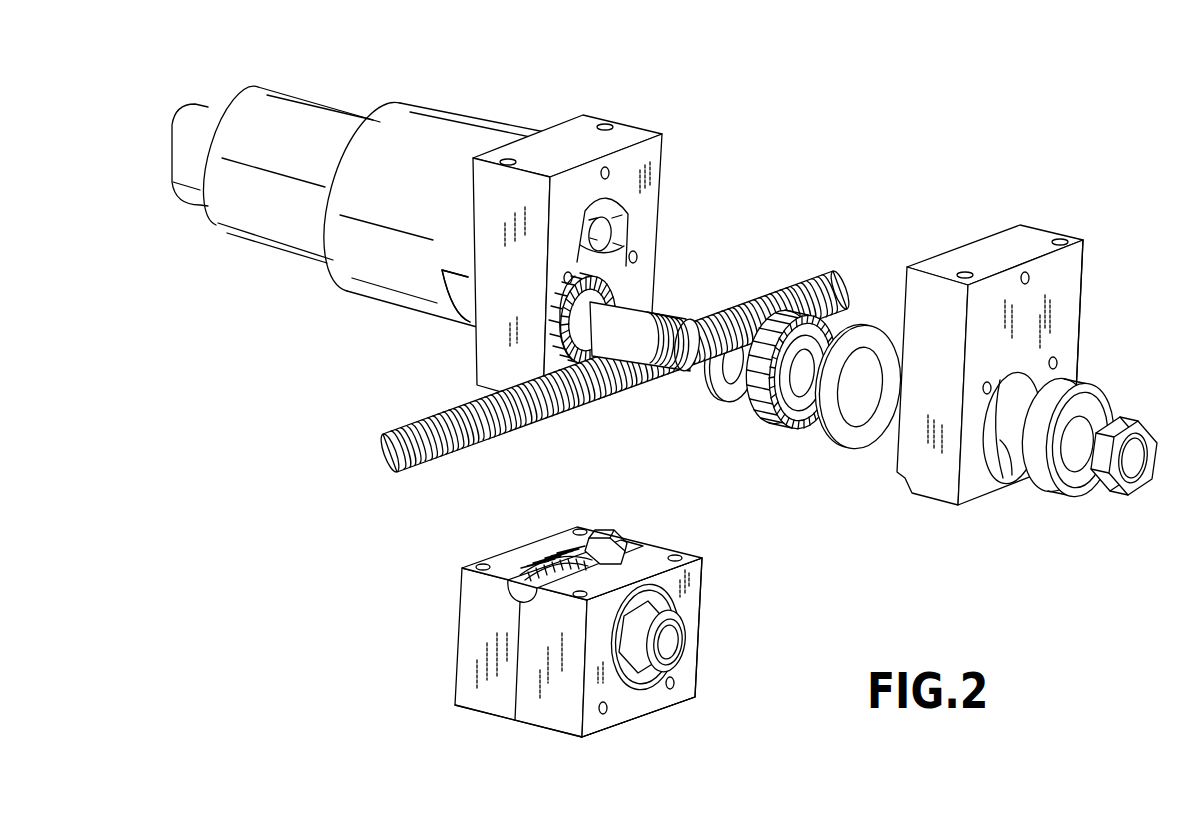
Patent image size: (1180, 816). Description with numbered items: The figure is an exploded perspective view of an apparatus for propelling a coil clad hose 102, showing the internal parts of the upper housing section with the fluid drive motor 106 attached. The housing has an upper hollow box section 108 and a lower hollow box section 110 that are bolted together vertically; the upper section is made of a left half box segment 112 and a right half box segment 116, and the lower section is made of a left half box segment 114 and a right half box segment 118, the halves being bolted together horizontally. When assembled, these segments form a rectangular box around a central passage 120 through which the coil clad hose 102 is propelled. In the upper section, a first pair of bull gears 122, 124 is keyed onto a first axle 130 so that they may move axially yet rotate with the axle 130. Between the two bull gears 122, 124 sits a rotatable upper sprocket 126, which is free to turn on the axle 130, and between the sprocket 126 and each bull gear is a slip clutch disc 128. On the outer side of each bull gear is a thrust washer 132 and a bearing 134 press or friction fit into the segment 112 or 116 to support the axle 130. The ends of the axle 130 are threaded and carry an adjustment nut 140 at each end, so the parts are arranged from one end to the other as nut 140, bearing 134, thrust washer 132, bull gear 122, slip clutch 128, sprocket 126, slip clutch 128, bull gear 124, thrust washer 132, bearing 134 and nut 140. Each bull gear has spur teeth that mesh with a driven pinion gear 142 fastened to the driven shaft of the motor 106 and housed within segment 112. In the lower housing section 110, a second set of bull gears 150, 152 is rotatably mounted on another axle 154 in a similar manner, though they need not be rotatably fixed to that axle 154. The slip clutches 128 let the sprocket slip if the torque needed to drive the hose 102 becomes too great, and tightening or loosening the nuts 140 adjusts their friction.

The coil clad hose 102 is at (471, 452).
The fluid drive motor 106 is at (343, 292).
The upper hollow box section 108 is at (1083, 276).
The lower hollow box section 110 is at (712, 600).
The left half box segment 112 is at (636, 131).
The left half box segment 114 is at (462, 686).
The right half box segment 116 is at (1034, 235).
The right half box segment 118 is at (682, 693).
The central passage 120 is at (481, 599).
The first bull gear 122 is at (612, 247).
The first bull gear 124 is at (795, 447).
The upper sprocket 126 is at (627, 292).
The slip clutch disc 128 is at (556, 318).
The first axle 130 is at (661, 313).
The thrust washer 132 is at (872, 330).
The bearing 134 is at (1073, 496).
The adjustment nut 140 is at (1132, 424).
The driven pinion gear 142 is at (619, 207).
The bull gear 150 is at (565, 540).
The bull gear 152 is at (618, 553).
The axle 154 is at (672, 643).